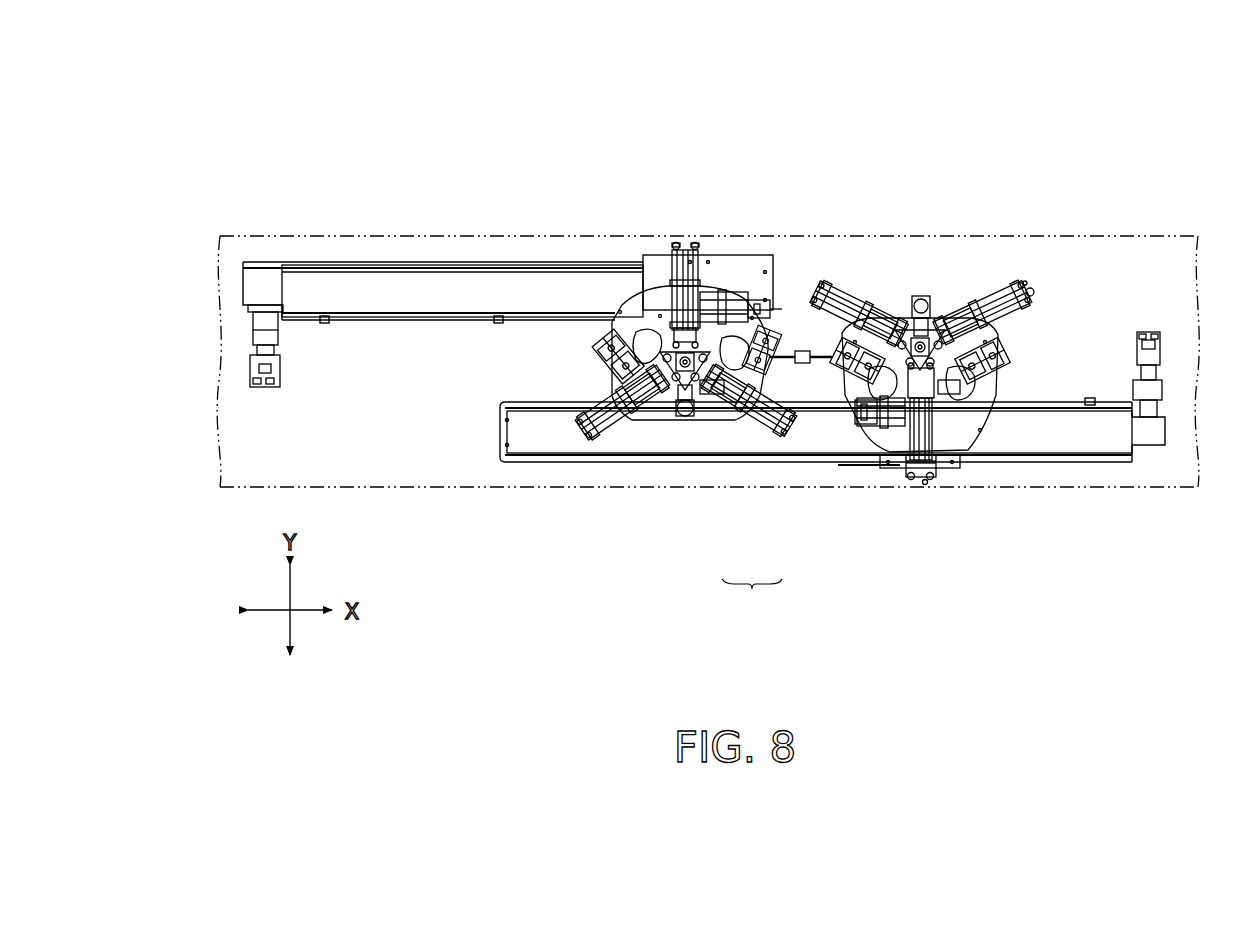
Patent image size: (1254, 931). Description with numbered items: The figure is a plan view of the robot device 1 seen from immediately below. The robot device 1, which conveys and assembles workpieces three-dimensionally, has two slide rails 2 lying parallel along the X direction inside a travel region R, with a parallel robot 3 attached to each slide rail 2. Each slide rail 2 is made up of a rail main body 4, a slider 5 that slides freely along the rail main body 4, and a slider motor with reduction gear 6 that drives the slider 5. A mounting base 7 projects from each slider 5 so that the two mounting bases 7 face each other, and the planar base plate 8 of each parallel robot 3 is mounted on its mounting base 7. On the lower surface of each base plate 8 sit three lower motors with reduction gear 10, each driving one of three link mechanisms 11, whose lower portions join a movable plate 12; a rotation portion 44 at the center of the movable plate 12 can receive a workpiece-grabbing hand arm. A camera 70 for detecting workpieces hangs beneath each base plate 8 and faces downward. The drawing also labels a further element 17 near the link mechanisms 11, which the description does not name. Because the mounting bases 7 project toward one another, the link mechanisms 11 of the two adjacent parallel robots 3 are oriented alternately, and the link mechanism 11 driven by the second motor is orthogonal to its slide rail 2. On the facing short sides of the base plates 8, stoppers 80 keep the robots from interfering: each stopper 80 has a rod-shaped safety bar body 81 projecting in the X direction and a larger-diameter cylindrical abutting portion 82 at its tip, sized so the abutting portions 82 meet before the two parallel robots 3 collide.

The robot device 1 is at (721, 360).
The slide rail 2 is at (540, 262).
The parallel robot 3 is at (778, 366).
The rail main body 4 is at (373, 280).
The slider 5 is at (722, 275).
The slider motor with reduction gear 6 is at (270, 388).
The mounting base 7 is at (670, 357).
The base plate 8 is at (660, 310).
The lower motor with reduction gear 10 is at (708, 283).
The link mechanism 11 is at (735, 298).
The movable plate 12 is at (673, 372).
The end fitting 17 is at (1035, 300).
The rotation portion 44 is at (718, 392).
The camera 70 is at (690, 418).
The stopper 80 is at (776, 481).
The safety bar body 81 is at (777, 363).
The abutting portion 82 is at (798, 363).
The travel region R is at (453, 237).